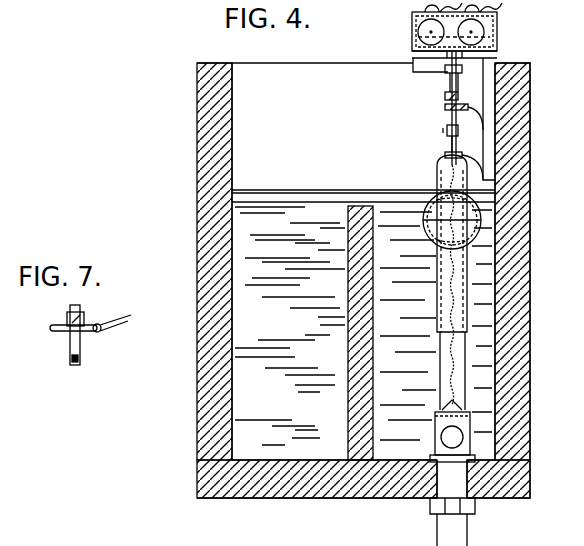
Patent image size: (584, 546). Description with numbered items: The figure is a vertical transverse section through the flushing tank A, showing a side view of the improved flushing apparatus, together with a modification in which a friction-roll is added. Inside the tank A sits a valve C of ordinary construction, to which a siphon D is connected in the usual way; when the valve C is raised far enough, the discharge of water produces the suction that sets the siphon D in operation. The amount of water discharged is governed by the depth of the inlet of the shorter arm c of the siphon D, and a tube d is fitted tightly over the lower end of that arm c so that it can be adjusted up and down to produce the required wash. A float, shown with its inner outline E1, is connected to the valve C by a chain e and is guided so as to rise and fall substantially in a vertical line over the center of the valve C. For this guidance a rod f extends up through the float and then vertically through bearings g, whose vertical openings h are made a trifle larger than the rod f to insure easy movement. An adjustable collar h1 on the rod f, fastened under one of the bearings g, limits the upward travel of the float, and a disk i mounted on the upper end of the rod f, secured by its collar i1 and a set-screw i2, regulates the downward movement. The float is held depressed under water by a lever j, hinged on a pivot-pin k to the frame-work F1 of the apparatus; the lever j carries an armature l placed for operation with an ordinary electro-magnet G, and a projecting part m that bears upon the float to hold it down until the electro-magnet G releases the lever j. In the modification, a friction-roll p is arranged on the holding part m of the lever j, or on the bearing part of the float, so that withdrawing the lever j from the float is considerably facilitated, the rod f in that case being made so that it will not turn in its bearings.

In FIG. 4, the tank A is at (361, 280).
In FIG. 4, the electro-magnet G is at (412, 44).
In FIG. 4, the armature l is at (497, 38).
In FIG. 4, the motor frame bracket F1 is at (490, 58).
In FIG. 4, the pivot-pin k is at (445, 69).
In FIG. 4, the rod f is at (447, 155).
In FIG. 7, the rod f is at (70, 338).
In FIG. 4, the lever j is at (450, 86).
In FIG. 4, the collar i1 is at (458, 95).
In FIG. 7, the collar i1 is at (68, 318).
In FIG. 4, the set-screw i2 is at (445, 92).
In FIG. 7, the set-screw i2 is at (80, 317).
In FIG. 4, the disk i is at (445, 107).
In FIG. 7, the disk i is at (50, 330).
In FIG. 4, the bearings g is at (471, 143).
In FIG. 4, the vertical openings h is at (447, 130).
In FIG. 4, the collar h1 is at (452, 141).
In FIG. 4, the tube d is at (437, 283).
In FIG. 4, the valve C is at (440, 217).
In FIG. 4, the float ring E1 is at (434, 233).
In FIG. 4, the siphon D is at (446, 362).
In FIG. 4, the chain e is at (449, 348).
In FIG. 4, the shorter arm c is at (445, 408).
In FIG. 7, the friction-roll p is at (99, 333).
In FIG. 7, the projecting part m is at (115, 314).